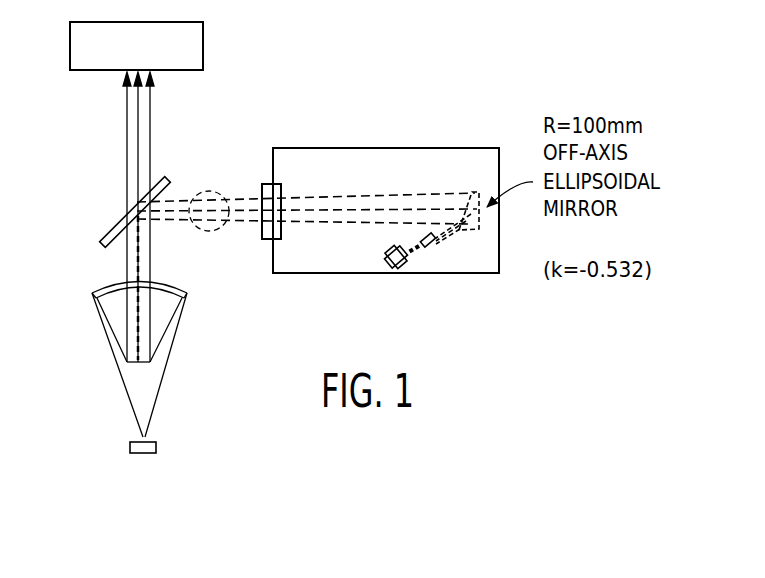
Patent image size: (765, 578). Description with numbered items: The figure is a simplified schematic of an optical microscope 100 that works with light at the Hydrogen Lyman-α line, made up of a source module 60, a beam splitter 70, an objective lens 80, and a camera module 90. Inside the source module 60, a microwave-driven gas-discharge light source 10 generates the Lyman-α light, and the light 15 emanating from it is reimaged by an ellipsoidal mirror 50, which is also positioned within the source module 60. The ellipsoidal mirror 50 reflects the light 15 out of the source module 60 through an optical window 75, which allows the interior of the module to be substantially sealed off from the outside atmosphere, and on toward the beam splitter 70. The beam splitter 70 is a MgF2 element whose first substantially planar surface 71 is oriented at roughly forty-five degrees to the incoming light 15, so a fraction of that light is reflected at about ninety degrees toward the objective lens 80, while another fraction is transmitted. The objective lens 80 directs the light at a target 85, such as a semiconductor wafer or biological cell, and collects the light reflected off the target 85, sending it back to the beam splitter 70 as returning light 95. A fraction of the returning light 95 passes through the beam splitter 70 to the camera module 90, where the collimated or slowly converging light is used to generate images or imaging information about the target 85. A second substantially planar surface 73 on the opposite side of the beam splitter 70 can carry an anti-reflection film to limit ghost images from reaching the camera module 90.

The microwave-driven gas-discharge light source 10 is at (405, 273).
The light 15 is at (222, 182).
The ellipsoidal mirror 50 is at (484, 208).
The source module 60 is at (467, 274).
The beam splitter 70 is at (158, 178).
The first substantially planar surface 71 is at (167, 197).
The second substantially-planar surface 73 is at (113, 217).
The optical window 75 is at (263, 247).
The objective lens 80 is at (113, 313).
The target 85 is at (143, 455).
The camera module 90 is at (205, 45).
The returning light 95 is at (128, 255).
The optical microscope 100 is at (527, 73).